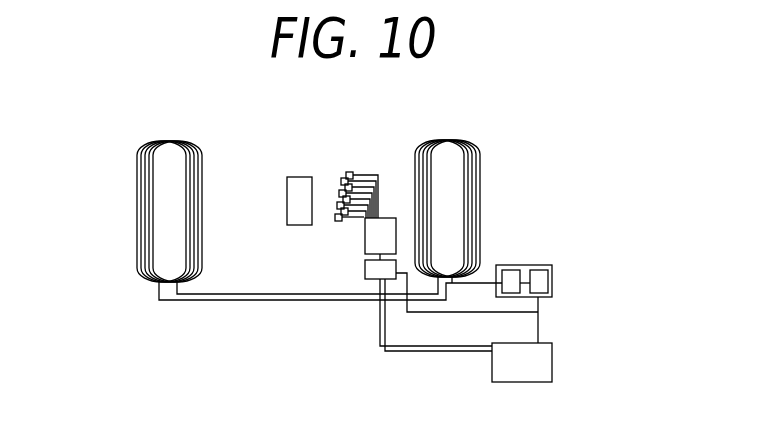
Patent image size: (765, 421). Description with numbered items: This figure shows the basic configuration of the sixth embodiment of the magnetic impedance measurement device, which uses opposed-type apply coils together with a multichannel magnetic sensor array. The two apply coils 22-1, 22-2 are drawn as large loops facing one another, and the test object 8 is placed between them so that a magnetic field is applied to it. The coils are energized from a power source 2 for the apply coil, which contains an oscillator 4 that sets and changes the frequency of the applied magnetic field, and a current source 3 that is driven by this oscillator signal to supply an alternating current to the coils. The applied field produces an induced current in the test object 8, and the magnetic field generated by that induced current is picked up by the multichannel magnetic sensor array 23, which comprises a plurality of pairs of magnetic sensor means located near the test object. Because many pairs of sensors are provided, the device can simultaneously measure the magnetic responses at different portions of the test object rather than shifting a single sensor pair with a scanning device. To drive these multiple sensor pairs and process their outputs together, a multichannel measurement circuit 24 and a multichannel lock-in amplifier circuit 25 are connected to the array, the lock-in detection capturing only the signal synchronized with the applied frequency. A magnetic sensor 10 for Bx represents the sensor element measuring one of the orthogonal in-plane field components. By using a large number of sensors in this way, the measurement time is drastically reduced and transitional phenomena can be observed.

The second coil 22-2 is at (152, 143).
The first coil 22-1 is at (478, 172).
The test object 8 is at (290, 183).
The multichannel magnetic sensor array 23 is at (352, 170).
The multichannel measurement circuit 24 is at (365, 249).
The multichannel lock-in amplifier circuit 25 is at (378, 274).
The power source 2 is at (553, 266).
The current source 3 is at (511, 276).
The oscillator 4 is at (546, 287).
The magnetic sensor for Bx 10 is at (546, 368).